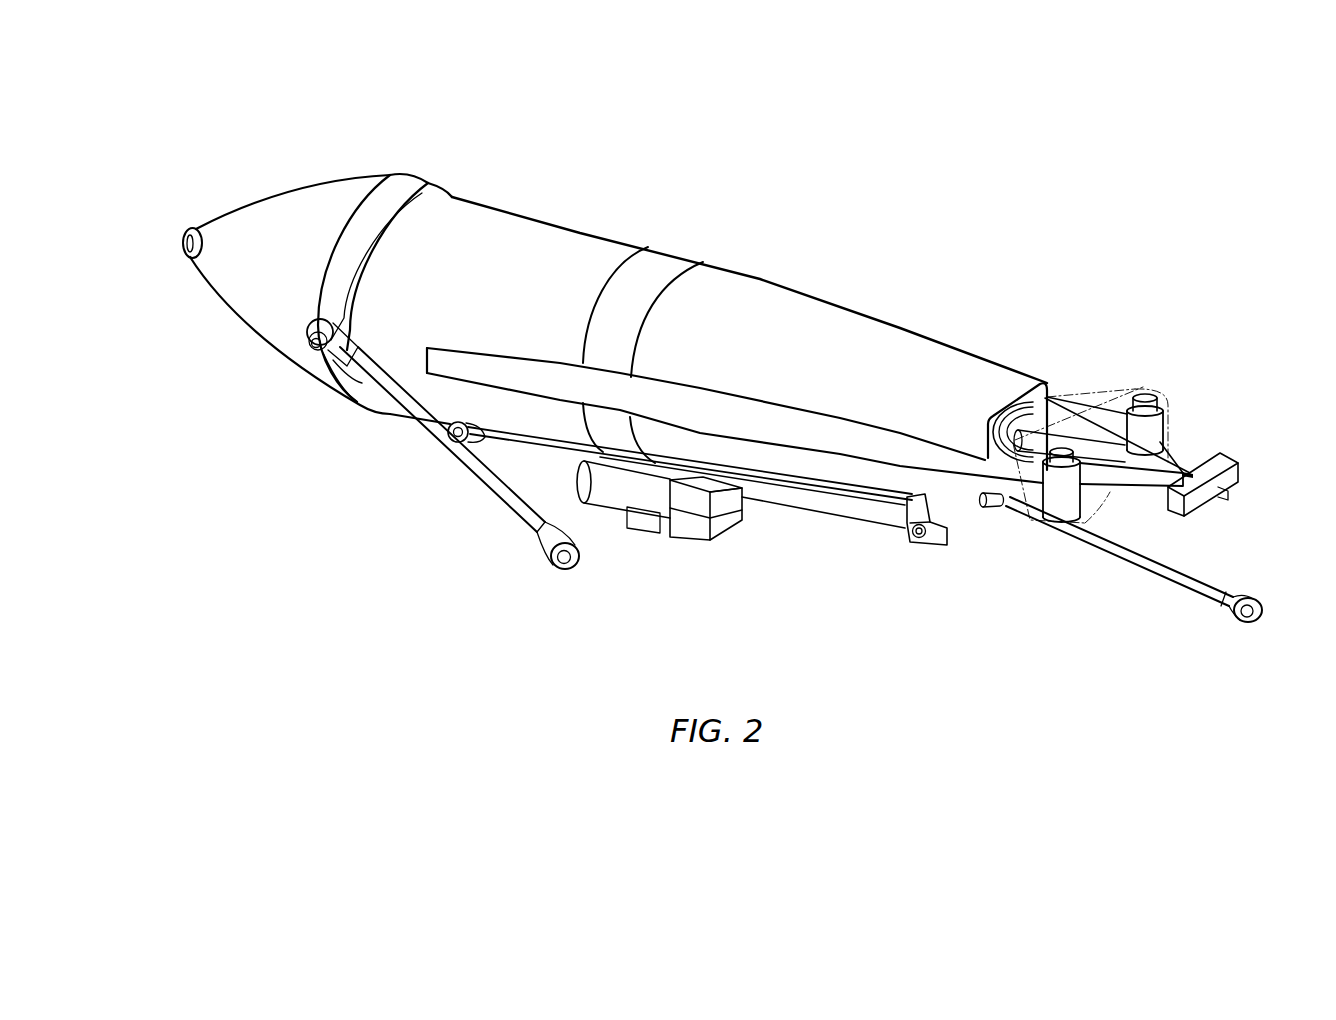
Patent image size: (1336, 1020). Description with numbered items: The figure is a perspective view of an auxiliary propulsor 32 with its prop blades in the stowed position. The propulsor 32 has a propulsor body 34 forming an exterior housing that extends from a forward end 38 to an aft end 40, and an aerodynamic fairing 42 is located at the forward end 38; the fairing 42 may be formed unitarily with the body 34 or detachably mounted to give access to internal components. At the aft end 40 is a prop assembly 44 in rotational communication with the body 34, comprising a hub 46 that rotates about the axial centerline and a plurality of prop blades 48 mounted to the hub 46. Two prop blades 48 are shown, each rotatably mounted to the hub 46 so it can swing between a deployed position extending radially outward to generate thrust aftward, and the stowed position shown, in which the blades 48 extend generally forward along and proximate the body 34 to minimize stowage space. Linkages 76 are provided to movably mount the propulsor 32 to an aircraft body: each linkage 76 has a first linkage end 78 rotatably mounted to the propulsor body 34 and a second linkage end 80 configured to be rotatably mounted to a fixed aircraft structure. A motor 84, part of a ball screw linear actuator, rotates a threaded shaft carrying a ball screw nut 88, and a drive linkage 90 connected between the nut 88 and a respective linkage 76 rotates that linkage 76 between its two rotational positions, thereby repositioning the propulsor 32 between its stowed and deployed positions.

The propulsor 32 is at (935, 207).
The propulsor body 34 is at (749, 286).
The forward end 38 is at (157, 238).
The aft end 40 is at (1055, 375).
The aerodynamic fairing 42 is at (285, 217).
The prop assembly 44 is at (1213, 408).
The hub 46 is at (1104, 494).
The prop blades 48 is at (1163, 425).
The linkages 76 is at (1205, 592).
The first linkage end 78 is at (306, 346).
The second linkage end 80 is at (591, 571).
The motor 84 is at (708, 541).
The ball screw nut 88 is at (917, 541).
The drive linkage 90 is at (858, 522).